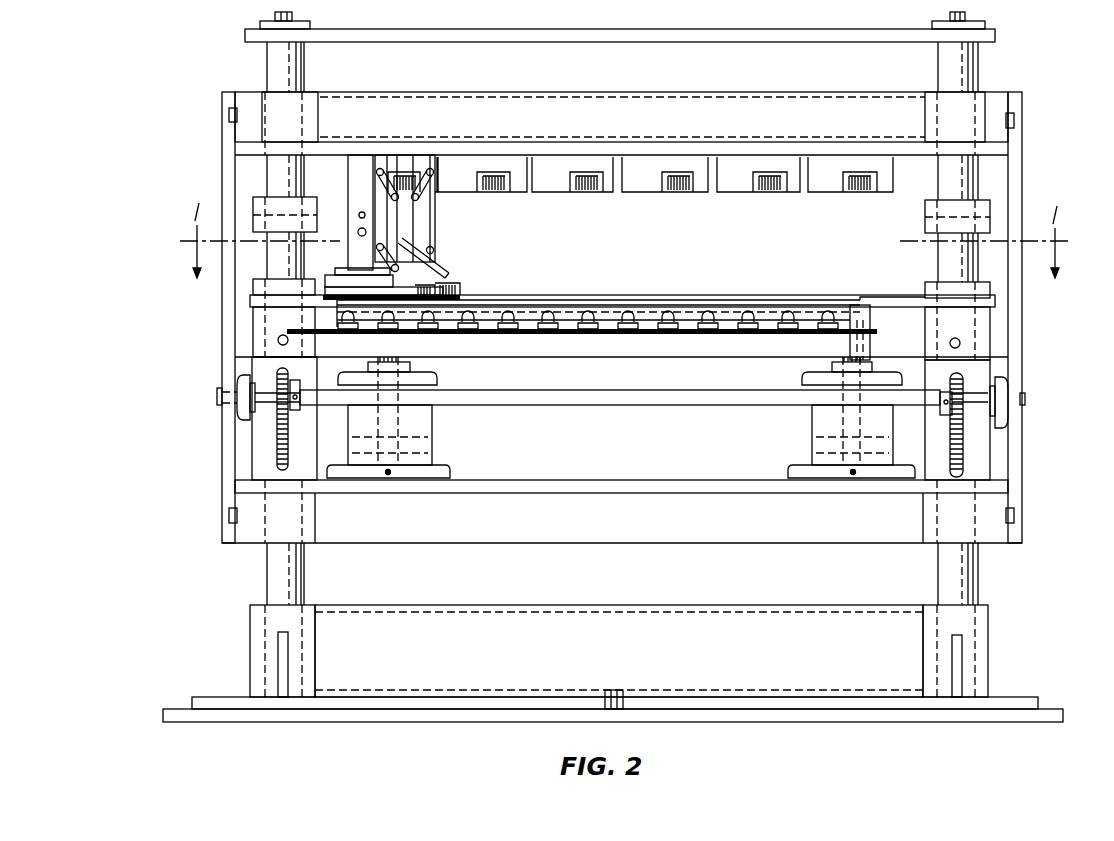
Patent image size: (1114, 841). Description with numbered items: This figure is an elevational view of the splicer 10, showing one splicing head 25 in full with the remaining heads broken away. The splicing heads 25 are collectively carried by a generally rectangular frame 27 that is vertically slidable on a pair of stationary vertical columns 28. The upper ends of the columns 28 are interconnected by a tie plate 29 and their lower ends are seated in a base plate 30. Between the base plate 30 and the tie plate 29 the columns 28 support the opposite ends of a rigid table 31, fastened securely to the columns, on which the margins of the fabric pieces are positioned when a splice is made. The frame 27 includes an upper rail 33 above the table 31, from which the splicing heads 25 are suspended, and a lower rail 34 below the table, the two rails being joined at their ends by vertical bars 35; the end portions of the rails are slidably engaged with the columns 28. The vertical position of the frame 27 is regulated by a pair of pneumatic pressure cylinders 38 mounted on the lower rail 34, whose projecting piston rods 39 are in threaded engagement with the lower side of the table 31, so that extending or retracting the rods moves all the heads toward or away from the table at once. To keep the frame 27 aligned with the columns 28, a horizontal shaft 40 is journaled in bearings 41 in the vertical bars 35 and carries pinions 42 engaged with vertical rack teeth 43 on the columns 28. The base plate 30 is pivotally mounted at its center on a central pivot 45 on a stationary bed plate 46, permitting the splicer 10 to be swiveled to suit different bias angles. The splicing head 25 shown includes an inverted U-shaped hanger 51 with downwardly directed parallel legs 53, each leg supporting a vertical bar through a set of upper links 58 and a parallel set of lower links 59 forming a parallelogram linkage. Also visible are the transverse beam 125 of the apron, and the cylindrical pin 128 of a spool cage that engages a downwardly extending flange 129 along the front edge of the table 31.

The splicer 10 is at (210, 172).
The splicing head 25 is at (429, 226).
The frame 27 is at (1022, 166).
The column 28 is at (275, 578).
The tie plate 29 is at (610, 38).
The base plate 30 is at (617, 625).
The table 31 is at (627, 303).
The upper rail 33 is at (600, 152).
The lower rail 34 is at (550, 480).
The vertical bar 35 is at (227, 452).
The pneumatic pressure cylinder 38 is at (413, 420).
The piston rod 39 is at (400, 345).
The horizontal shaft 40 is at (600, 400).
The bearing 41 is at (237, 380).
The pinion 42 is at (298, 385).
The rack teeth 43 is at (290, 432).
The central pivot 45 is at (623, 700).
The bed plate 46 is at (885, 712).
The hanger 51 is at (705, 190).
The leg 53 is at (540, 185).
The upper link 58 is at (430, 192).
The lower link 59 is at (430, 255).
The beam 125 is at (725, 334).
The cylindrical pin 128 is at (520, 320).
The flange 129 is at (722, 318).